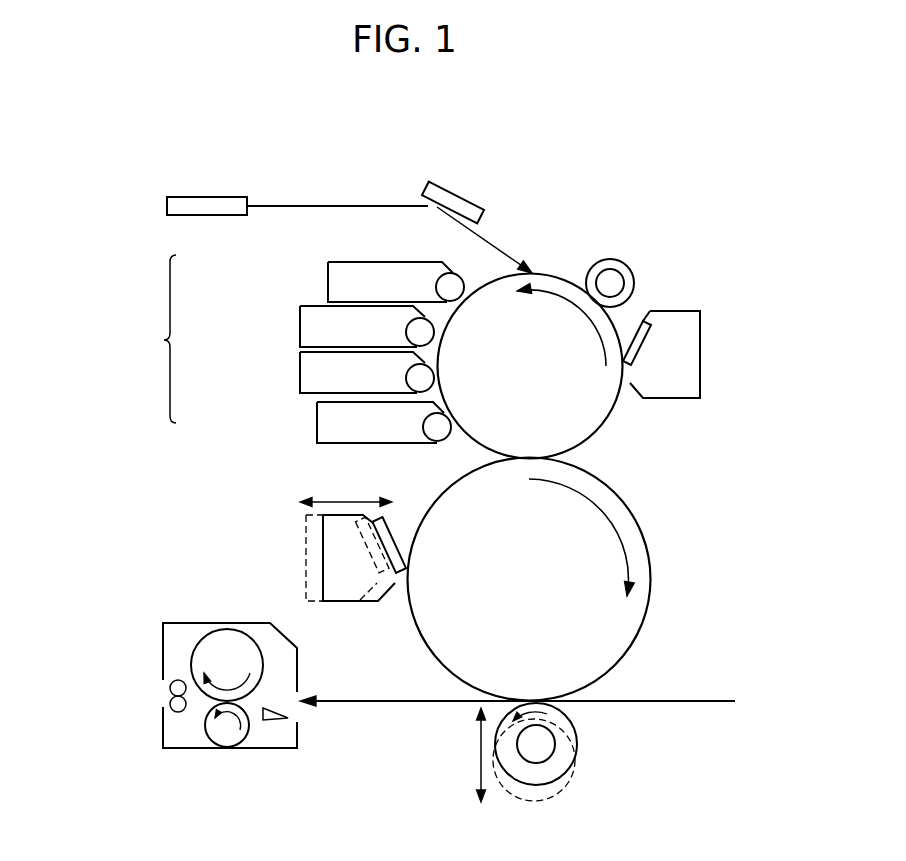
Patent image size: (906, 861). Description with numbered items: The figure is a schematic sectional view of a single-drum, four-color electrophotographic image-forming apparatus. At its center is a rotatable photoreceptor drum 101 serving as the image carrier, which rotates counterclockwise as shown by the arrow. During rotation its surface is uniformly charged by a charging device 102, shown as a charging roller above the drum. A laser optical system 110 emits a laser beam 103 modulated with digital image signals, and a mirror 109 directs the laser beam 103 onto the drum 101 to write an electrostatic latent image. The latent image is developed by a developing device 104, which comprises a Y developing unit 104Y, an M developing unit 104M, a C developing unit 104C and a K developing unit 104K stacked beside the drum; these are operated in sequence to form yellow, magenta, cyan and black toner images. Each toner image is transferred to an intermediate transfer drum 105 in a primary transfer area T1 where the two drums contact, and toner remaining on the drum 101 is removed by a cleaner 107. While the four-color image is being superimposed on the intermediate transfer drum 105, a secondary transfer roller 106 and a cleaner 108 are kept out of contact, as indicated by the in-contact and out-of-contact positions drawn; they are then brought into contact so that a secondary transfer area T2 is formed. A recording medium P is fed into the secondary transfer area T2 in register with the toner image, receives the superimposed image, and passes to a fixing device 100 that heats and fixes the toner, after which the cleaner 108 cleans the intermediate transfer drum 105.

The fixing device 100 is at (163, 645).
The electrophotographic photoreceptor drum 101 is at (612, 410).
The charging device 102 is at (630, 258).
The laser beam 103 is at (485, 240).
The developing device 104 is at (295, 349).
The Y developing unit 104Y is at (327, 283).
The M developing unit 104M is at (300, 327).
The C developing unit 104C is at (300, 370).
The K developing unit 104K is at (317, 422).
The intermediate transfer drum 105 is at (650, 573).
The secondary transfer roller 106 is at (560, 793).
The cleaner 107 is at (700, 340).
The cleaner for the intermediate transfer drum 108 is at (322, 547).
The mirror 109 is at (453, 192).
The laser optical system 110 is at (167, 206).
The primary transfer area T1 is at (522, 458).
The secondary transfer area T2 is at (528, 700).
The recording medium P is at (698, 701).